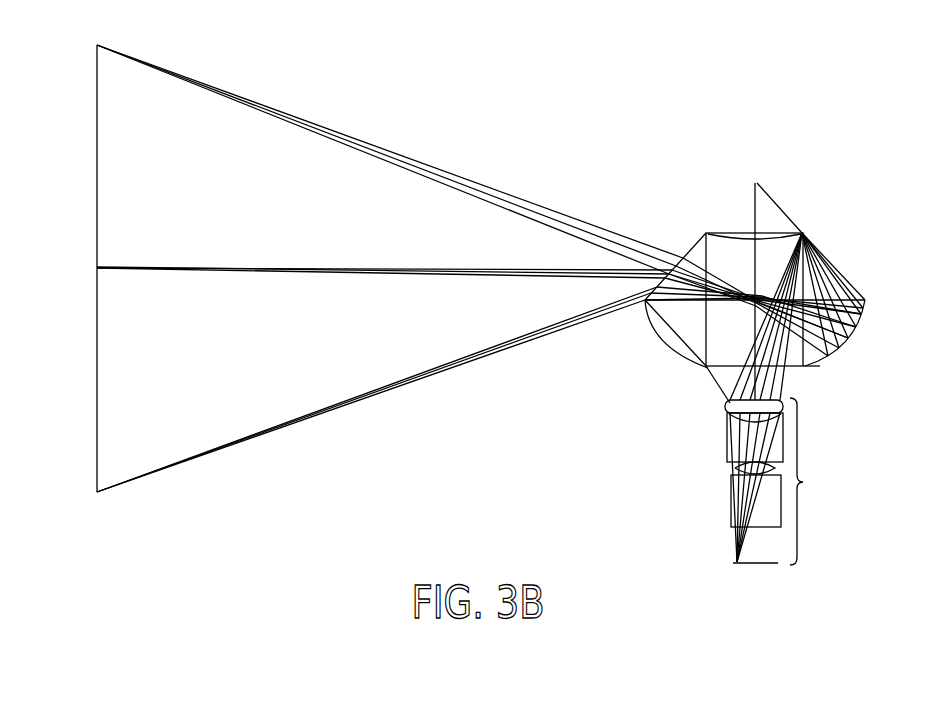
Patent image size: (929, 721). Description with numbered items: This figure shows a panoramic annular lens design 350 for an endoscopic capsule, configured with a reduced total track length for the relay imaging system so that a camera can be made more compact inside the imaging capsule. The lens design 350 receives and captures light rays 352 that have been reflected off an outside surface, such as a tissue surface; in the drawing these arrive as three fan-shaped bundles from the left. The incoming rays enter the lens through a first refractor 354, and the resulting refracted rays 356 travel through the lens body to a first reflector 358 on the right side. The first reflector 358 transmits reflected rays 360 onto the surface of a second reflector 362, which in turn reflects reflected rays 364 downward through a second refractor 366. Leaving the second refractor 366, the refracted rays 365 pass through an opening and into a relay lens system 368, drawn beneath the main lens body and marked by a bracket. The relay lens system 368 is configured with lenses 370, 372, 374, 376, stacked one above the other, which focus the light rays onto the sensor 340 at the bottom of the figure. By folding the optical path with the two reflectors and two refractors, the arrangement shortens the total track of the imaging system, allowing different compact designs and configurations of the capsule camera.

The sensor 340 is at (744, 566).
The lens design 350 is at (692, 233).
The light rays 352 is at (230, 92).
The first refractor 354 is at (675, 249).
The refracted rays 356 is at (726, 303).
The first reflector 358 is at (848, 337).
The reflected rays 360 is at (841, 267).
The second reflector 362 is at (768, 232).
The reflected rays 364 is at (810, 366).
The refracted rays 365 is at (793, 375).
The second refractor 366 is at (718, 368).
The relay lens system 368 is at (748, 506).
The lens 370 is at (723, 406).
The lens 372 is at (726, 425).
The lens 374 is at (730, 463).
The lens 376 is at (735, 478).